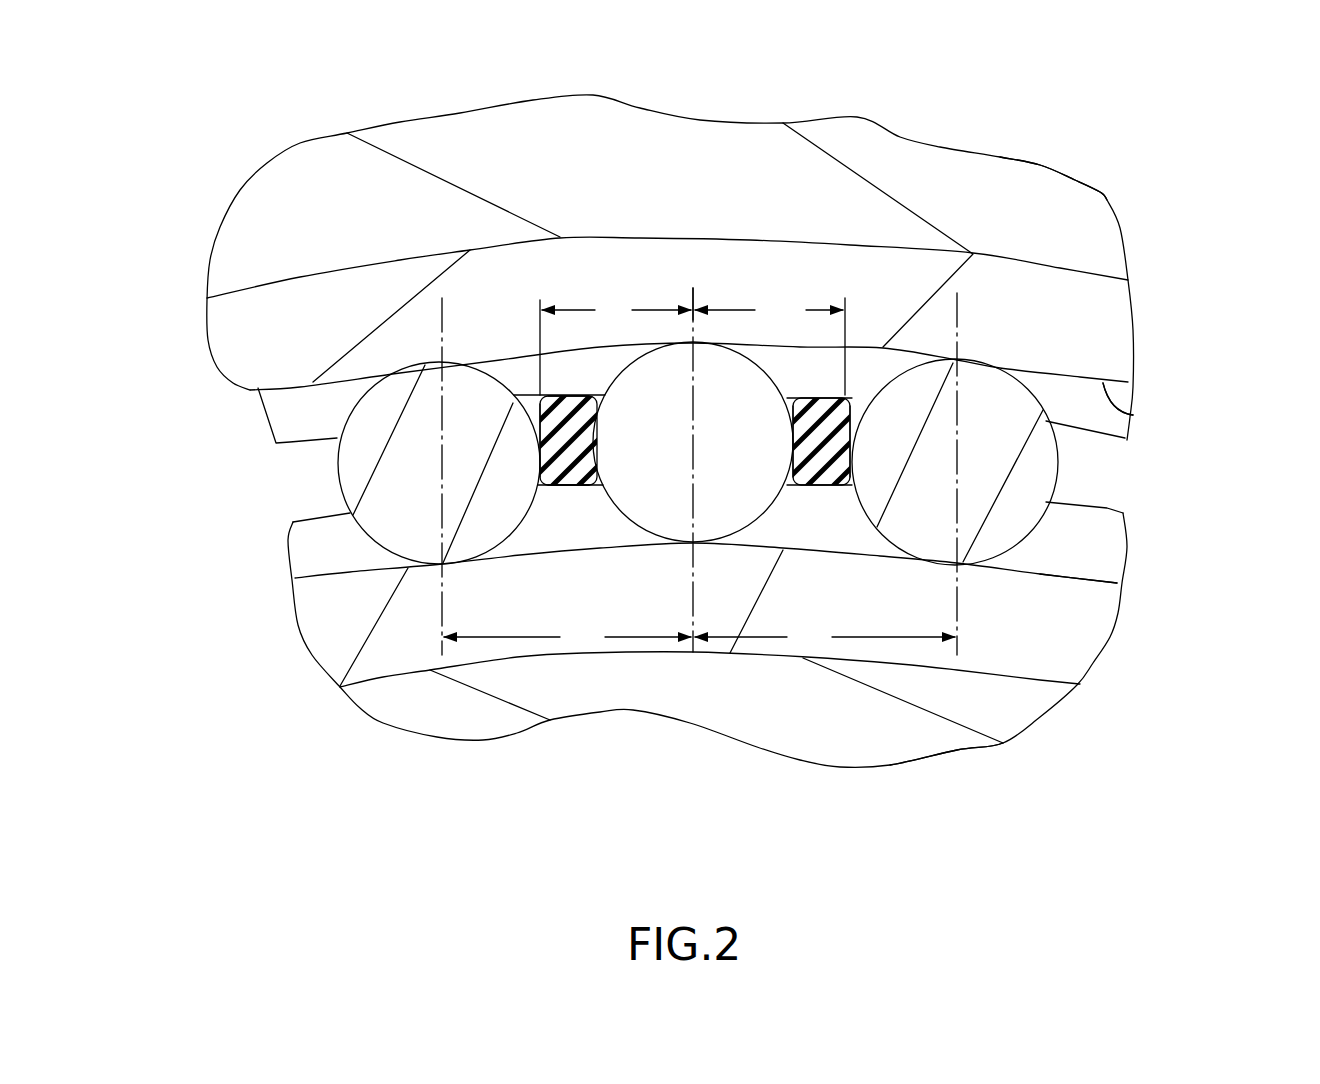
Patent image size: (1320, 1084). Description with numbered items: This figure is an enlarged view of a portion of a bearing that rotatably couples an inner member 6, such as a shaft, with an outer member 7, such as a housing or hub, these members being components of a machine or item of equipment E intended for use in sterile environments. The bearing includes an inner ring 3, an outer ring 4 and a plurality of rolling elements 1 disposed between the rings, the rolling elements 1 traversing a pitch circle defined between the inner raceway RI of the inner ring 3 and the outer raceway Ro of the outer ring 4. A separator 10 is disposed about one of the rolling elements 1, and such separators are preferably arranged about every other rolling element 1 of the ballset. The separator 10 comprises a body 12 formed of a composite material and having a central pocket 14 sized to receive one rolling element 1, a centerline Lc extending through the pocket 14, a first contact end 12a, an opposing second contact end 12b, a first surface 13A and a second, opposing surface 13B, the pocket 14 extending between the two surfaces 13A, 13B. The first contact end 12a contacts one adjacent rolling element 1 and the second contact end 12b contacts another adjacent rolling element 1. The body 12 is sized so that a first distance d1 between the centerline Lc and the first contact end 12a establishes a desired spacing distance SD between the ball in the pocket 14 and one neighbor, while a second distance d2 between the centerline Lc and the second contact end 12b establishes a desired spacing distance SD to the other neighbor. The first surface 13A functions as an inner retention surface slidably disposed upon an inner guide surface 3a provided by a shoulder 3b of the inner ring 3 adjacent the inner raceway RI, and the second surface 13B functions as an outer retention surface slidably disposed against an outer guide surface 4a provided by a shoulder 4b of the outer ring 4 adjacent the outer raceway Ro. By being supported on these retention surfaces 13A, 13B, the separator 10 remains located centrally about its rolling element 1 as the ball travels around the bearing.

The rolling element 1 is at (382, 395).
The inner ring 3 is at (1092, 637).
The inner guide surface 3a is at (1103, 510).
The shoulder 3b is at (307, 540).
The outer ring 4 is at (1113, 340).
The outer guide surface 4a is at (1103, 438).
The shoulder 4b is at (275, 410).
The inner member 6 is at (955, 749).
The outer member 7 is at (1072, 197).
The separator 10 is at (828, 522).
The body 12 is at (581, 489).
The first contact end 12a is at (537, 430).
The second contact end 12b is at (850, 432).
The first surface 13A is at (557, 487).
The second surface 13B is at (560, 396).
The central pocket 14 is at (793, 432).
The item of equipment E is at (333, 98).
The first distance d1 is at (615, 346).
The second distance d2 is at (770, 346).
The spacing distance SD is at (699, 638).
The centerline Lc is at (694, 292).
The outer raceway Ro is at (1137, 417).
The inner raceway RI is at (1085, 573).